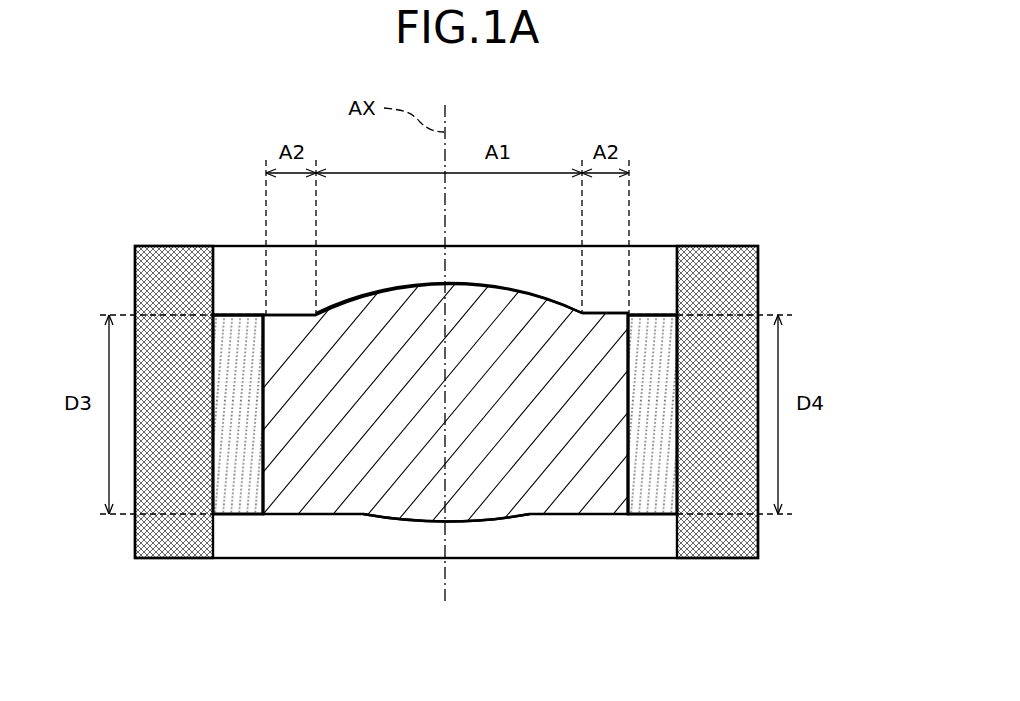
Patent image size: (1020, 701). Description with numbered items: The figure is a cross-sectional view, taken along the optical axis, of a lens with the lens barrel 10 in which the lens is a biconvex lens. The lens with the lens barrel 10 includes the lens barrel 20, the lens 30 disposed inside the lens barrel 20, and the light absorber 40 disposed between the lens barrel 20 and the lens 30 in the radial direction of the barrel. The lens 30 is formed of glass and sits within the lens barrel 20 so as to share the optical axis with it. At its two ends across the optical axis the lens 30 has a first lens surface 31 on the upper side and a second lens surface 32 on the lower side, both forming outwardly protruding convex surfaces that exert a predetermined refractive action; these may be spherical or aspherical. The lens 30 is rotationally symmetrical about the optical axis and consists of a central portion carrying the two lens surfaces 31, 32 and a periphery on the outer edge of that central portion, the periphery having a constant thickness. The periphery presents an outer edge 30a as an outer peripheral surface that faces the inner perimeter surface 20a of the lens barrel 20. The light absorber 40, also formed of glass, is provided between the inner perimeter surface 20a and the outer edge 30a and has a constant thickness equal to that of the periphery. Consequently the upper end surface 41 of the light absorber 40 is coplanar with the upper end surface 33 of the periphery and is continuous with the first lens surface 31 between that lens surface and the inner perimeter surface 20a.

The lens with the lens barrel 10 is at (793, 587).
The lens barrel 20 is at (172, 542).
The inner perimeter surface 20a is at (215, 284).
The lens 30 is at (427, 480).
The outer edge 30a is at (243, 427).
The first lens surface 31 is at (405, 283).
The second lens surface 32 is at (480, 523).
The upper end surface of the periphery 33 is at (291, 313).
The light absorber 40 is at (242, 497).
The upper end surface of the light absorber 41 is at (240, 313).